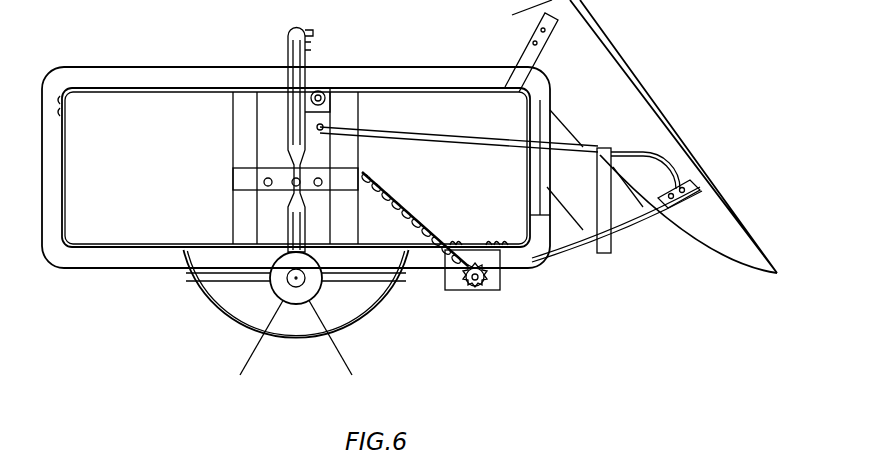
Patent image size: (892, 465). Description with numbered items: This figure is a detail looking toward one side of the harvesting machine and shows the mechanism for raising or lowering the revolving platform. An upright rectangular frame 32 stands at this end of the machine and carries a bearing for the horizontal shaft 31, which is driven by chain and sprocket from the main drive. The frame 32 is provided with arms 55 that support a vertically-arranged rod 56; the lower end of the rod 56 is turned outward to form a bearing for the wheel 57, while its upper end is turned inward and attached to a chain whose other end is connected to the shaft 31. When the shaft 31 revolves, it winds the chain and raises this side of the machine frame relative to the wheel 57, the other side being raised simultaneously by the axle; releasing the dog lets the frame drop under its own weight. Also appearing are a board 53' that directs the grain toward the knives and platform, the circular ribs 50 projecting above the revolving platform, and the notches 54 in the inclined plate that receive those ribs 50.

The horizontal shaft 31 is at (488, 280).
The upright rectangular frame 32 is at (418, 80).
The circular ribs 50 is at (406, 210).
The board 53' is at (644, 139).
The notches 54 is at (430, 135).
The arms 55 is at (242, 214).
The vertically-arranged rod 56 is at (292, 62).
The wheel 57 is at (398, 333).